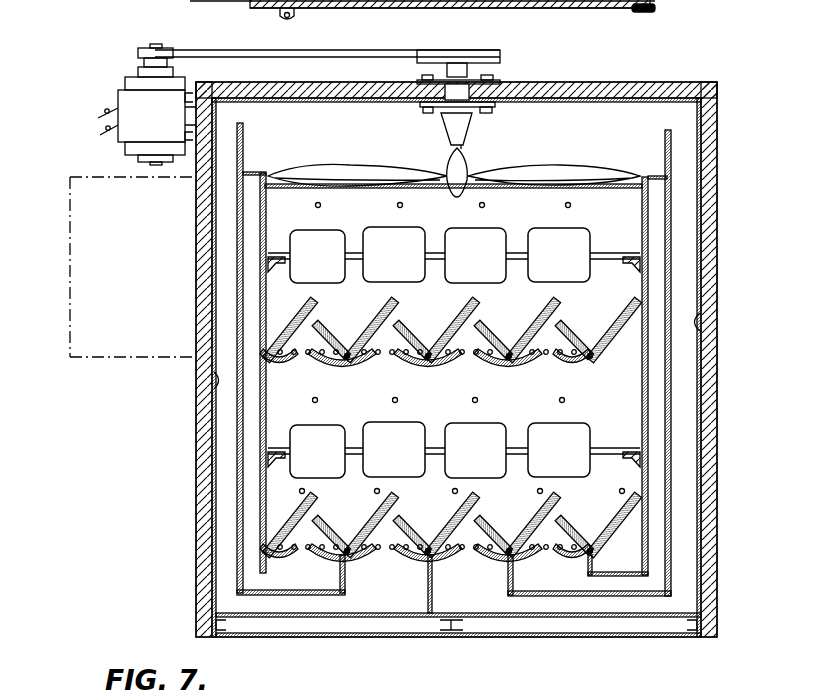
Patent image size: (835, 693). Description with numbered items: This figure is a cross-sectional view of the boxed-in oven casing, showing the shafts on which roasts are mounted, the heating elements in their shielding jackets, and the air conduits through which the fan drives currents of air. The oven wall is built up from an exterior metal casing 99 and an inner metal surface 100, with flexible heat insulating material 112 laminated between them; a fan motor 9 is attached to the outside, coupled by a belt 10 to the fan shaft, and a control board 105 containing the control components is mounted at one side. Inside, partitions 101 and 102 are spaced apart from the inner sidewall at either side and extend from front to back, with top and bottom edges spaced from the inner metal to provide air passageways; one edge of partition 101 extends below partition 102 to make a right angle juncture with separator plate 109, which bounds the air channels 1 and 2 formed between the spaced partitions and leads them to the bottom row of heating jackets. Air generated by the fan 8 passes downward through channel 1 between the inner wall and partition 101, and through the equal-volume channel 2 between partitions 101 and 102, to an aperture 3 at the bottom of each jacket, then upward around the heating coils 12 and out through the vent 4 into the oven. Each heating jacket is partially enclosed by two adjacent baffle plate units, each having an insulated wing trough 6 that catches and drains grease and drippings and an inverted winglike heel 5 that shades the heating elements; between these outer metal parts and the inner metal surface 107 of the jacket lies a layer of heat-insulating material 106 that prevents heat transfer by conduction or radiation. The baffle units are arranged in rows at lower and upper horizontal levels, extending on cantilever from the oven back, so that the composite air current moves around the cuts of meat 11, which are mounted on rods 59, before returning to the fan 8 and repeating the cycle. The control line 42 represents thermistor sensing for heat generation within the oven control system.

The air channel 1 is at (466, 364).
The air channel 2 is at (660, 222).
The air aperture 3 is at (437, 472).
The vent aperture 4 is at (398, 315).
The wing heel shield 5 is at (327, 367).
The wing trough 6 is at (451, 441).
The fan 8 is at (340, 167).
The fan motor 9 is at (120, 88).
The drive belt 10 is at (328, 55).
The cuts of meat 11 is at (317, 238).
The heating coils 12 is at (581, 368).
The control line 42 is at (403, 207).
The rods 59 is at (353, 262).
The exterior metal casing 99 is at (575, 86).
The inner metal surface 100 is at (540, 104).
The partition 101 is at (670, 297).
The partition 102 is at (253, 261).
The control board 105 is at (68, 253).
The heat-insulating material 106 is at (293, 313).
The inner metal surface of heating jacket 107 is at (508, 327).
The separator plate 109 is at (312, 597).
The flexible heat insulating material 112 is at (634, 93).